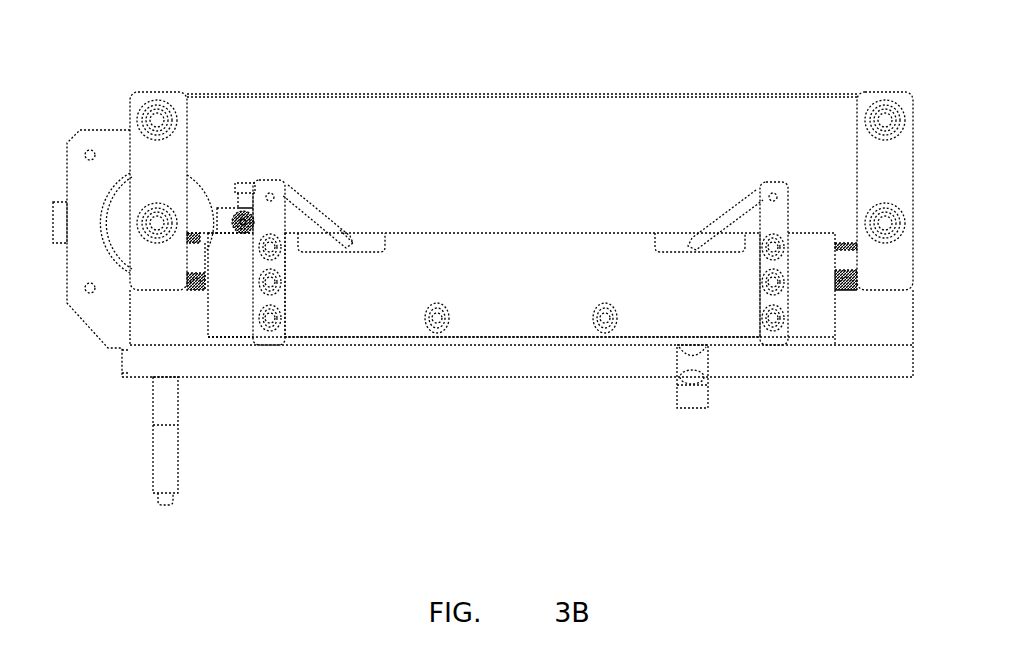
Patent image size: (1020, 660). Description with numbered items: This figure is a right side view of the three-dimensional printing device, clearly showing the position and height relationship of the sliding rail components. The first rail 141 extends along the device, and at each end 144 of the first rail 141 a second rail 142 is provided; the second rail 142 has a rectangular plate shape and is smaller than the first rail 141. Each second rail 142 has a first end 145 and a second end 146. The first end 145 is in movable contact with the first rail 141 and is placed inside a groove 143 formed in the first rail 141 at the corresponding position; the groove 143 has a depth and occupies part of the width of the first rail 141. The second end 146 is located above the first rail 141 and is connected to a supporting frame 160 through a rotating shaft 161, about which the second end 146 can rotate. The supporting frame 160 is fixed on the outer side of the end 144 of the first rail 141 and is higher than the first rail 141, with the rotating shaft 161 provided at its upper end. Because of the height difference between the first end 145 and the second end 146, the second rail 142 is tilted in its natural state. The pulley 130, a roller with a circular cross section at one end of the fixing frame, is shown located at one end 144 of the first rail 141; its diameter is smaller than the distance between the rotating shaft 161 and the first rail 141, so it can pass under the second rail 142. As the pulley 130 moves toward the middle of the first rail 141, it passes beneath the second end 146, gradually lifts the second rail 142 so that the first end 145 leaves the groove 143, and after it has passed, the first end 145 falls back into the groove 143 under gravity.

The pulley 130 is at (235, 216).
The first rail 141 is at (533, 233).
The second rail 142 is at (310, 223).
The groove 143 is at (370, 247).
The end of the first rail 144 is at (243, 234).
The first end of the second rail 145 is at (348, 240).
The second end of the second rail 146 is at (270, 212).
The supporting frame 160 is at (262, 192).
The rotating shaft 161 is at (772, 193).